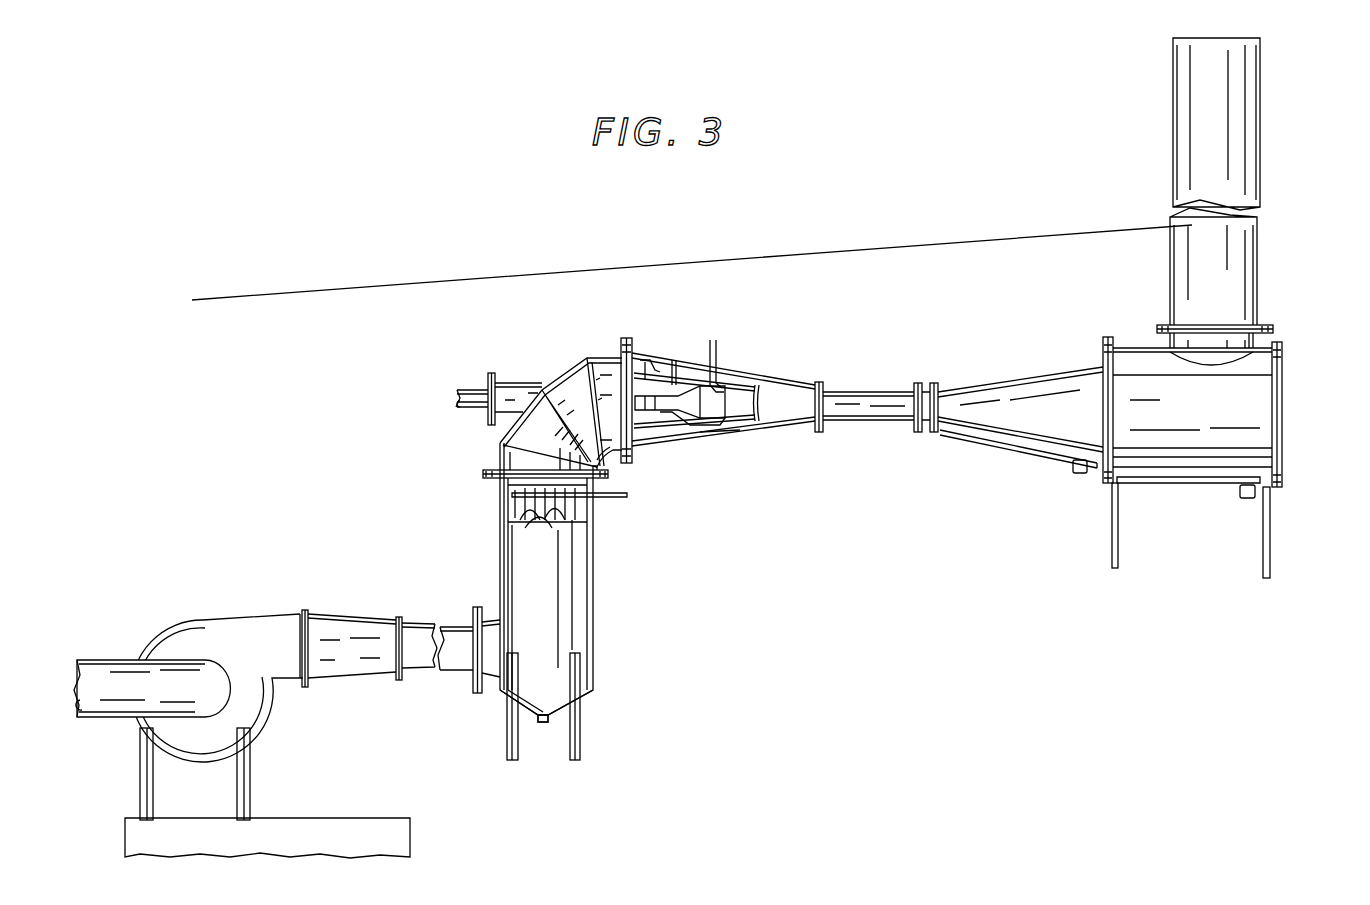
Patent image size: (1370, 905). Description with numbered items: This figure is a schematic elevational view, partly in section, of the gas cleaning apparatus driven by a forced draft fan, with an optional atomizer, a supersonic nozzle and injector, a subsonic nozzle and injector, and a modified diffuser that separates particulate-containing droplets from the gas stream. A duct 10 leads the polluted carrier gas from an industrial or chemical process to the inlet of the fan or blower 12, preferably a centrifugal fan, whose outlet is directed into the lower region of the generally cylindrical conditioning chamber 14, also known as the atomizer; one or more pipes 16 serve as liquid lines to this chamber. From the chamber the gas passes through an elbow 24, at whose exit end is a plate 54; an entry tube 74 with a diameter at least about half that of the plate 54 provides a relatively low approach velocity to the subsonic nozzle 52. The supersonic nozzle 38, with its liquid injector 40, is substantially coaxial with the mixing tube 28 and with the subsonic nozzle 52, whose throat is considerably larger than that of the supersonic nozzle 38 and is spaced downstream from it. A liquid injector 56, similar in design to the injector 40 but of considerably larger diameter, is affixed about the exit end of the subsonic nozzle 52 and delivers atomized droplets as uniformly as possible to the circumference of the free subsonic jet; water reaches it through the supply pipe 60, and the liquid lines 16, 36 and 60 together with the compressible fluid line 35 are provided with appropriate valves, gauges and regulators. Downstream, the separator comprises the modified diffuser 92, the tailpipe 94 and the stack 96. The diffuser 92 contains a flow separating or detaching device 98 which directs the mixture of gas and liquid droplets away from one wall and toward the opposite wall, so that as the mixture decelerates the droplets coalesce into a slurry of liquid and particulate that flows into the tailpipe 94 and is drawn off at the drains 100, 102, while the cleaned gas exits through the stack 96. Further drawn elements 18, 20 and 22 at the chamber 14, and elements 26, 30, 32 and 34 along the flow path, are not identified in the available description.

The duct 10 is at (108, 662).
The fan or blower 12 is at (203, 618).
The conditioning chamber 14 is at (498, 548).
The pipes 16 is at (627, 497).
The screen 18 is at (552, 522).
The hopper 20 is at (558, 712).
The drain outlet 22 is at (550, 724).
The elbow 24 is at (572, 364).
The venturi tube 26 is at (781, 385).
The mixing tube 28 is at (862, 424).
The inlet pipe 30 is at (514, 382).
The flange 32 is at (634, 450).
The flange 34 is at (490, 374).
The compressible fluid line 35 is at (464, 410).
The liquid line 36 is at (470, 390).
The supersonic nozzle 38 is at (672, 418).
The liquid injector 40 is at (705, 428).
The subsonic nozzle 52 is at (699, 368).
The plate 54 is at (652, 360).
The liquid injector 56 is at (735, 432).
The supply pipe 60 is at (718, 352).
The entry tube 74 is at (675, 360).
The modified diffuser 92 is at (994, 385).
The tailpipe 94 is at (1272, 456).
The stack 96 is at (1178, 283).
The flow separating or detaching device 98 is at (920, 382).
The drain 100 is at (1070, 470).
The drain 102 is at (1238, 493).